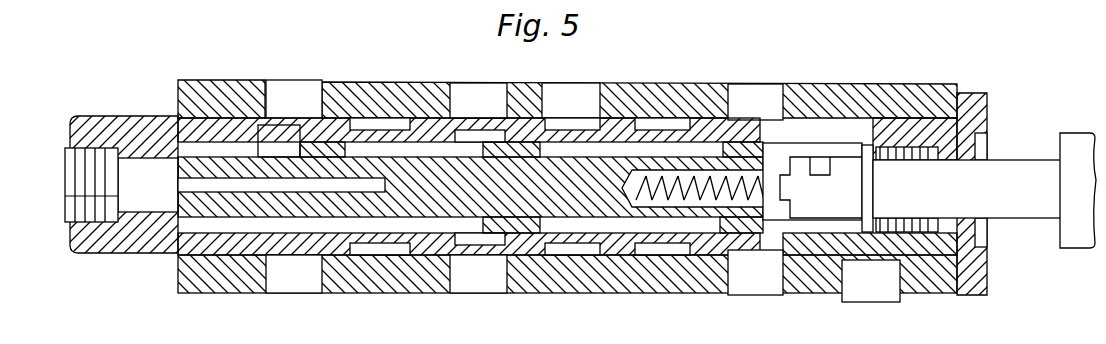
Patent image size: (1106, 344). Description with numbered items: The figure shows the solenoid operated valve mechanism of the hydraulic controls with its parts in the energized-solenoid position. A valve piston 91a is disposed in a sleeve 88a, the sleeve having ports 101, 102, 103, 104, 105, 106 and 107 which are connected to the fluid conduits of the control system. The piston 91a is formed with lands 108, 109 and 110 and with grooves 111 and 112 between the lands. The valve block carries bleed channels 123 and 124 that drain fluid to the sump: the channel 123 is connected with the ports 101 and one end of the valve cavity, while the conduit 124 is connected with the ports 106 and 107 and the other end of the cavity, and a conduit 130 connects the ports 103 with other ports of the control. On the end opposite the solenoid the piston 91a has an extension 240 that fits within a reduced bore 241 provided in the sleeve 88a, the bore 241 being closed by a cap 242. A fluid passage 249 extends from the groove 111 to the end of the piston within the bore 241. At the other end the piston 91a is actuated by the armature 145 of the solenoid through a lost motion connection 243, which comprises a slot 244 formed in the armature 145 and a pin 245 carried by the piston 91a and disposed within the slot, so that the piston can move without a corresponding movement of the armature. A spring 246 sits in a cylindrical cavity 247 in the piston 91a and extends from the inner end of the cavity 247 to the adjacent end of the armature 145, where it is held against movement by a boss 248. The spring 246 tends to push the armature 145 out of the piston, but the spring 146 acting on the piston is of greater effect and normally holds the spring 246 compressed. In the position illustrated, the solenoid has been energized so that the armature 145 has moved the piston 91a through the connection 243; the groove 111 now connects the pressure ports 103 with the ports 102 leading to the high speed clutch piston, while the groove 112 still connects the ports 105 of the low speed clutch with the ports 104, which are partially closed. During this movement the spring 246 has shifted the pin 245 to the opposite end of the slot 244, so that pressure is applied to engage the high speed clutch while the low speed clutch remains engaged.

The sleeve 88a is at (424, 128).
The valve piston 91a is at (110, 188).
The ports 101 is at (302, 134).
The ports 102 is at (362, 135).
The ports 103 is at (470, 130).
The ports 104 is at (556, 135).
The ports 105 is at (648, 130).
The ports 106 is at (735, 135).
The ports 107 is at (890, 140).
The land 108 is at (314, 142).
The land 109 is at (498, 150).
The land 110 is at (768, 150).
The groove 111 is at (450, 160).
The groove 112 is at (582, 150).
The bleed channel 123 is at (300, 286).
The bleed channel 124 is at (848, 300).
The conduit 130 is at (482, 286).
The armature 145 is at (1068, 140).
The spring 146 is at (925, 158).
The extension 240 is at (180, 196).
The reduced bore 241 is at (135, 212).
The cap 242 is at (70, 162).
The lost motion connection 243 is at (864, 200).
The slot 244 is at (855, 183).
The pin 245 is at (812, 140).
The spring 246 is at (705, 212).
The cylindrical cavity 247 is at (742, 238).
The boss 248 is at (783, 190).
The fluid passage 249 is at (180, 182).